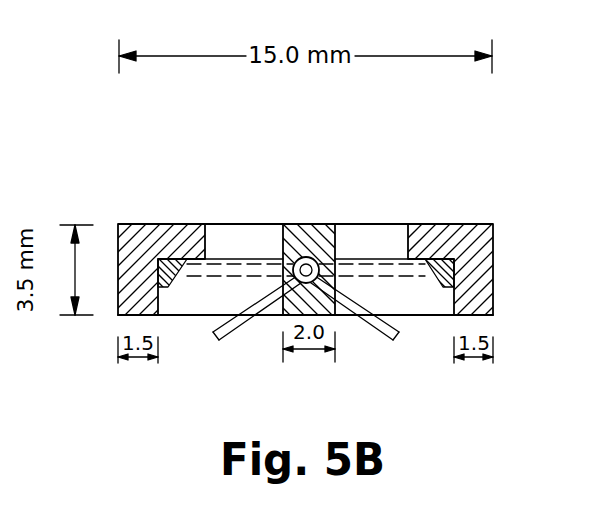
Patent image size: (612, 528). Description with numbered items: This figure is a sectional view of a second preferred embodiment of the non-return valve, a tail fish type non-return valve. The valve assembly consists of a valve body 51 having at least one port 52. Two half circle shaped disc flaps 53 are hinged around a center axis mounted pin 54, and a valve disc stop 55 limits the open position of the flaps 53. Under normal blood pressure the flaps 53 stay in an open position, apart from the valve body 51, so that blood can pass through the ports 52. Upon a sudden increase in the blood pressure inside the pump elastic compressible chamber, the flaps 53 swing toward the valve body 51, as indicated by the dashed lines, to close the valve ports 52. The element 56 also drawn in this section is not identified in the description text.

The valve body 51 is at (495, 309).
The port 52 is at (242, 229).
The disc flap 53 is at (389, 338).
The center axis mounted pin 54 is at (302, 230).
The valve disc stop 55 is at (281, 316).
The reflective facet 56 is at (447, 288).